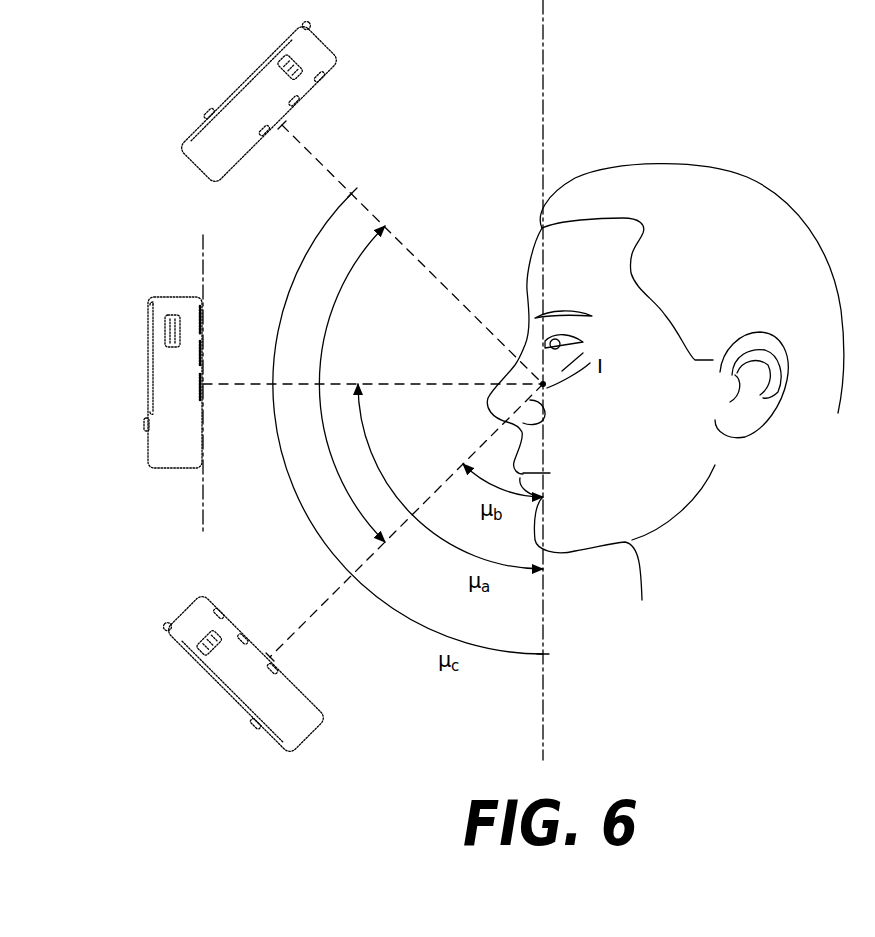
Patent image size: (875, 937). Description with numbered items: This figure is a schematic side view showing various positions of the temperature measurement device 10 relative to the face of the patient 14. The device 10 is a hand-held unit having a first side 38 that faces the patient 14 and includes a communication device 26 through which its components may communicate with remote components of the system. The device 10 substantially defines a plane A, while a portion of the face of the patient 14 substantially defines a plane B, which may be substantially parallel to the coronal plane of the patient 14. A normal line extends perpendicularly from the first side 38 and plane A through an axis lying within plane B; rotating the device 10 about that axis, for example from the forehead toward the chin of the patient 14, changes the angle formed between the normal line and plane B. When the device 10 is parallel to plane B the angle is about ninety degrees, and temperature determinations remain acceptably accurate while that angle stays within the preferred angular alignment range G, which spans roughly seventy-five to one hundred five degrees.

The temperature measurement device 10 is at (179, 395).
The patient 14 is at (760, 177).
The communication device 26 is at (156, 293).
The first side 38 is at (203, 440).
The plane A is at (203, 512).
The plane B is at (548, 40).
The angular alignment range G is at (353, 277).